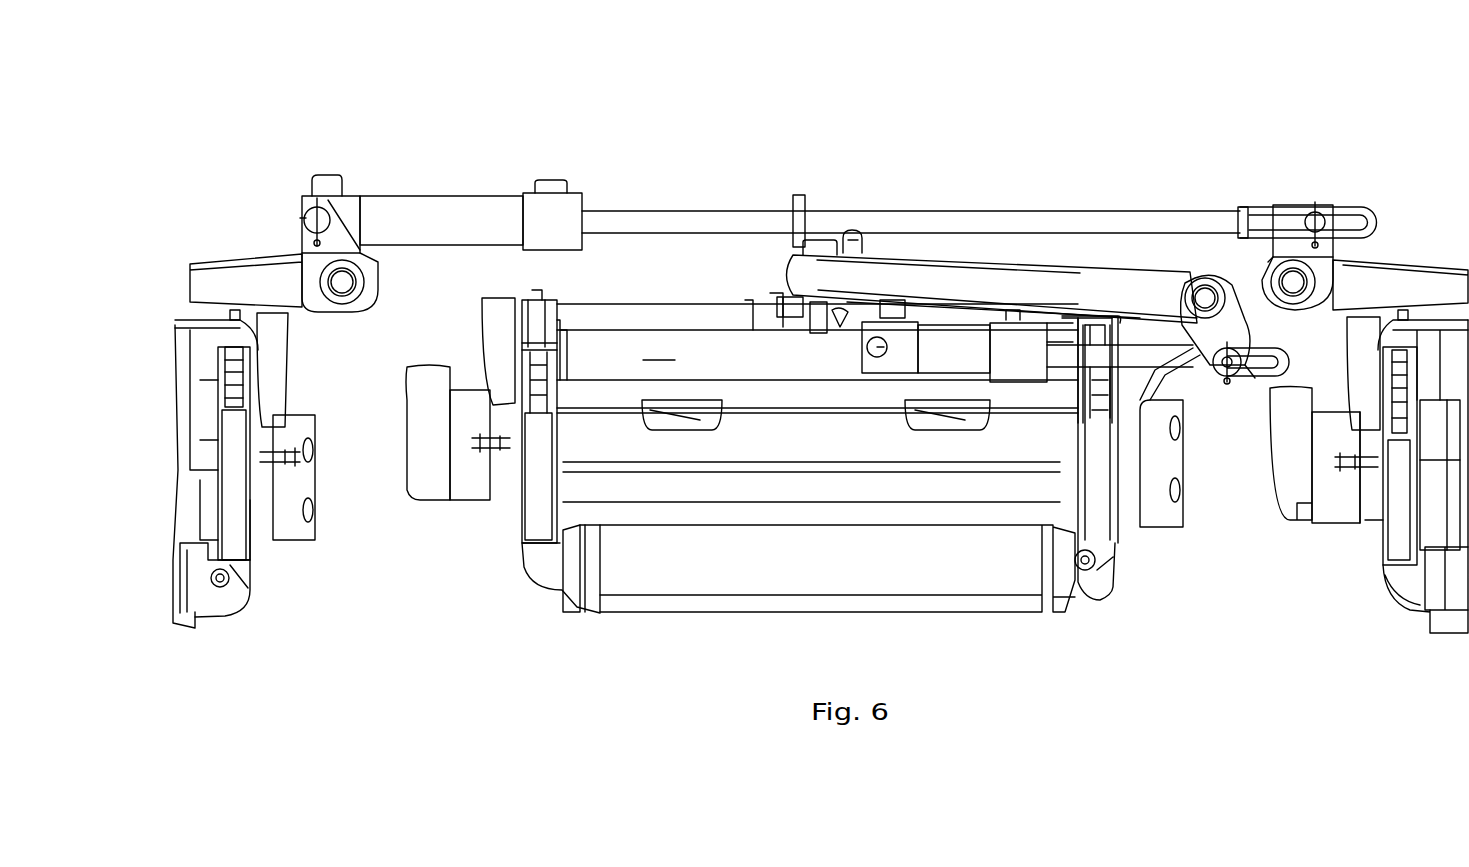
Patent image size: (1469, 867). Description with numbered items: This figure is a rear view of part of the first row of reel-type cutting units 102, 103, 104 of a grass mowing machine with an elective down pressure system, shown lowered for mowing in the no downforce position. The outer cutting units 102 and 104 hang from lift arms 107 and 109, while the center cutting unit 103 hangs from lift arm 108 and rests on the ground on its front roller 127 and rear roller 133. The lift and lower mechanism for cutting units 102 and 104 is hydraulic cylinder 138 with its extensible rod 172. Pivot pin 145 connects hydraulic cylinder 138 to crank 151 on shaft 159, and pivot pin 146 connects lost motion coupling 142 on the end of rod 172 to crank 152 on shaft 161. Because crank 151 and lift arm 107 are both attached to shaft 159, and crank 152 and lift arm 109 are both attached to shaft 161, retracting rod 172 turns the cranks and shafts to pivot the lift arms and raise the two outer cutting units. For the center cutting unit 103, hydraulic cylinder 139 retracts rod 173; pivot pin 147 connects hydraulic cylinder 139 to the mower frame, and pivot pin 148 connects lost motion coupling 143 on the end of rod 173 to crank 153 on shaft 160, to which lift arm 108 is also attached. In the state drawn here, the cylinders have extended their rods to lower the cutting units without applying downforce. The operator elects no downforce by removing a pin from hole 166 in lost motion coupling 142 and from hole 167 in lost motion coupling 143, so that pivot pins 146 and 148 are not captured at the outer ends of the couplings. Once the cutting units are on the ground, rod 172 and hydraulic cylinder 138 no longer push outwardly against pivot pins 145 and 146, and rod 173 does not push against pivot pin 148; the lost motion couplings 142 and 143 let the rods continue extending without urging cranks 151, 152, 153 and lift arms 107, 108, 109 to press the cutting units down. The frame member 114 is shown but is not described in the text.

The reel-type cutting unit 102 is at (302, 596).
The reel-type cutting unit 103 is at (1030, 645).
The reel-type cutting unit 104 is at (1355, 592).
The lift arm 107 is at (240, 265).
The lift arm 108 is at (1010, 275).
The lift arm 109 is at (1380, 272).
The frame 114 is at (632, 318).
The front roller 127 is at (702, 613).
The rear roller 133 is at (635, 588).
The hydraulic cylinder 138 is at (420, 200).
The hydraulic cylinder 139 is at (952, 335).
The lost motion coupling 142 is at (1270, 207).
The lost motion coupling 143 is at (1207, 378).
The pivot pin 145 is at (312, 216).
The pivot pin 146 is at (1318, 212).
The pivot pin 147 is at (880, 340).
The pivot pin 148 is at (1250, 348).
The crank 151 is at (378, 270).
The crank 152 is at (1287, 282).
The crank 153 is at (1240, 283).
The shaft 159 is at (343, 287).
The shaft 160 is at (1205, 298).
The shaft 161 is at (1275, 268).
The hole 166 is at (1350, 205).
The hole 167 is at (1255, 378).
The extensible rod 172 is at (876, 215).
The rod 173 is at (1070, 345).